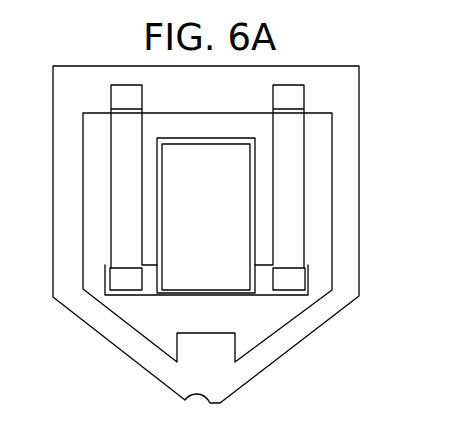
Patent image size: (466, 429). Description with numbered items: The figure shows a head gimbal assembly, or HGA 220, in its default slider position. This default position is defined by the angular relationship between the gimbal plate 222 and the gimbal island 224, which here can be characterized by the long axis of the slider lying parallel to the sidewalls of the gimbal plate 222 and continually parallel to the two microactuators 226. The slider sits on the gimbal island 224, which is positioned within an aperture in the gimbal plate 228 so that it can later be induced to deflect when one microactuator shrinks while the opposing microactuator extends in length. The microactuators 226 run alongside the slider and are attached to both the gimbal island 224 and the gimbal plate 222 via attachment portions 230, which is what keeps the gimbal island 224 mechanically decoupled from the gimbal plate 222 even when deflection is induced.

The HGA 220 is at (380, 244).
The gimbal plate 222 is at (179, 389).
The gimbal island 224 is at (248, 310).
The microactuators 226 is at (305, 200).
The aperture in the gimbal plate 228 is at (325, 147).
The attachment portions 230 is at (293, 279).